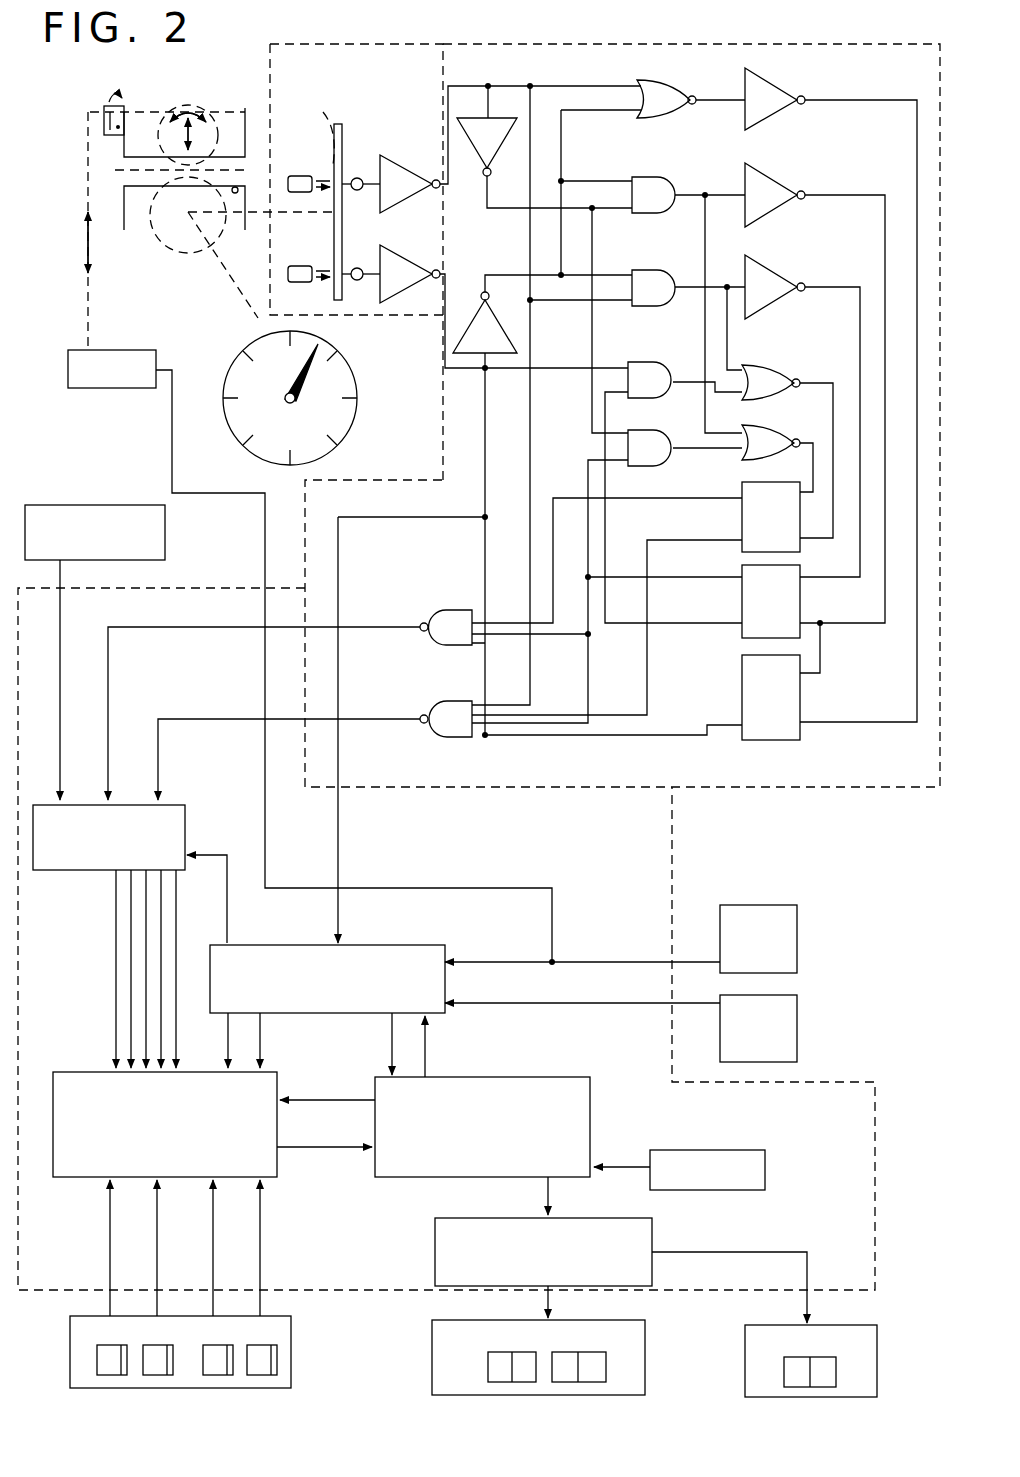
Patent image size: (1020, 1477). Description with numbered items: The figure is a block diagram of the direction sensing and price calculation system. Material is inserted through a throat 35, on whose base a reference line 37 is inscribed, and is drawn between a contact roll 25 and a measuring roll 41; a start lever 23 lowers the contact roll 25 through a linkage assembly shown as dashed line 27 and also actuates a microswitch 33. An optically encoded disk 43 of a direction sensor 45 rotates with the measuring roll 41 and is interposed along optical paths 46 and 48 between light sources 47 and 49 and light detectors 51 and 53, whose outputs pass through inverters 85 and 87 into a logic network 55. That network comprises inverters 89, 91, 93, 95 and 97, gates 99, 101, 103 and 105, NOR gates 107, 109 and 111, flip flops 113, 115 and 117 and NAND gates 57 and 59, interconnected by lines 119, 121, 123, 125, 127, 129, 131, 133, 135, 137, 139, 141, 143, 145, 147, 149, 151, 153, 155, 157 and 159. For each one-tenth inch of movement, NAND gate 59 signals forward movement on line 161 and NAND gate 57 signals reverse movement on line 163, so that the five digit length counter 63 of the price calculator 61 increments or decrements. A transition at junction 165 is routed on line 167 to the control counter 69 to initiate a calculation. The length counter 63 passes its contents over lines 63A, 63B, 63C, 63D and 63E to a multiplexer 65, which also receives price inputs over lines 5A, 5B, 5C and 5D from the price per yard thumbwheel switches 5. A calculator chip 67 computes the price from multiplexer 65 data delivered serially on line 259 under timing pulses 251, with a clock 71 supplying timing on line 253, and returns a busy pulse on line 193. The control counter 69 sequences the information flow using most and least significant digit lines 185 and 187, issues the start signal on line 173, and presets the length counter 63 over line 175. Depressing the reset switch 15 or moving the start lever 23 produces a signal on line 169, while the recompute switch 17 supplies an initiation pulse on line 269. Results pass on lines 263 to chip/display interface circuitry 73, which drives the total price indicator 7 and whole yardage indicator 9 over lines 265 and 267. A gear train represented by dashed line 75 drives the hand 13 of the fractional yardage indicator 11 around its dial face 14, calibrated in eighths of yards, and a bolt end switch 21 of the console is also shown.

The price per yard thumbwheel switches 5 is at (143, 1362).
The price digit switch line 5A is at (110, 1215).
The price digit switch line 5B is at (157, 1256).
The price digit switch line 5C is at (213, 1246).
The price digit switch line 5D is at (260, 1260).
The total price indicator 7 is at (432, 1356).
The whole yardage indicator 9 is at (745, 1361).
The fractional yardage indicator 11 is at (356, 391).
The indicator hand 13 is at (298, 373).
The dial face 14 is at (310, 421).
The reset switch 15 is at (797, 951).
The recompute switch 17 is at (797, 1029).
The bolt end switch 21 is at (165, 541).
The start lever 23 is at (108, 106).
The contact roll 25 is at (201, 118).
The linkage assembly 27 is at (146, 112).
The microswitch 33 is at (128, 389).
The throat 35 is at (126, 163).
The reference line 37 is at (238, 189).
The measuring roll 41 is at (205, 253).
The optically encoded disk 43 is at (372, 104).
The direction sensor 45 is at (418, 46).
The optical path 46 is at (318, 127).
The light source 47 is at (310, 178).
The optical path 48 is at (326, 280).
The light source 49 is at (310, 268).
The light detector 51 is at (357, 178).
The light detector 53 is at (357, 268).
The logic network 55 is at (688, 46).
The NAND gate 57 is at (412, 627).
The NAND gate 59 is at (422, 719).
The price calculator 61 is at (875, 1172).
The length counter 63 is at (186, 821).
The length counter output 63A is at (116, 920).
The length counter output 63B is at (131, 950).
The length counter output 63C is at (146, 985).
The length counter output 63D is at (161, 915).
The length counter output 63E is at (176, 946).
The multiplexer 65 is at (80, 1072).
The calculator chip 67 is at (585, 1060).
The control counter 69 is at (435, 928).
The clock 71 is at (722, 1150).
The chip/display interface circuit 73 is at (435, 1241).
The gear train 75 is at (245, 300).
The inverter 85 is at (410, 184).
The inverter 87 is at (410, 274).
The inverter 89 is at (544, 147).
The inverter 91 is at (542, 321).
The inverter 93 is at (775, 99).
The inverter 95 is at (775, 195).
The inverter 97 is at (775, 287).
The NAND gate 99 is at (688, 195).
The NAND gate 101 is at (688, 288).
The NAND gate 103 is at (685, 380).
The NAND gate 105 is at (685, 448).
The NOR gate 107 is at (666, 99).
The NOR gate 109 is at (771, 382).
The NOR gate 111 is at (771, 442).
The flip flop 113 is at (771, 517).
The flip flop 115 is at (771, 601).
The flip flop 117 is at (771, 697).
The inverter output 119 is at (518, 72).
The line 121 is at (605, 72).
The inverter output 123 is at (485, 369).
The line 125 is at (614, 368).
The line 127 is at (628, 112).
The line 129 is at (612, 195).
The line 131 is at (740, 195).
The line 133 is at (872, 195).
The line 135 is at (813, 486).
The line 137 is at (736, 287).
The line 139 is at (732, 392).
The line 141 is at (833, 532).
The line 143 is at (859, 577).
The line 145 is at (890, 100).
The line 147 is at (742, 498).
The signal line 149 is at (605, 392).
The line 151 is at (606, 462).
The line 153 is at (485, 682).
The line 155 is at (705, 522).
The line 157 is at (736, 450).
The line 159 is at (702, 100).
The line 161 is at (219, 719).
The line 163 is at (206, 627).
The junction 165 is at (487, 517).
The input line 167 is at (452, 517).
The line 169 is at (172, 466).
The line 173 is at (392, 1055).
The line 175 is at (228, 916).
The most significant digit lines 185 is at (228, 1056).
The least significant digit lines 187 is at (260, 1058).
The line 193 is at (425, 1062).
The timing pulse lines 251 is at (352, 1100).
The line 253 is at (604, 1167).
The line 259 is at (352, 1147).
The output lines 263 is at (550, 1206).
The line 265 is at (548, 1299).
The yards output line 267 is at (776, 1252).
The line 269 is at (648, 1003).